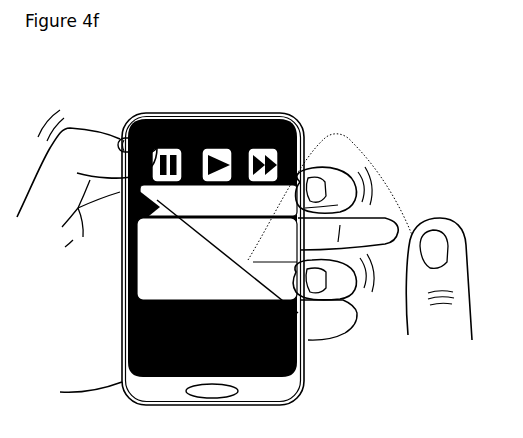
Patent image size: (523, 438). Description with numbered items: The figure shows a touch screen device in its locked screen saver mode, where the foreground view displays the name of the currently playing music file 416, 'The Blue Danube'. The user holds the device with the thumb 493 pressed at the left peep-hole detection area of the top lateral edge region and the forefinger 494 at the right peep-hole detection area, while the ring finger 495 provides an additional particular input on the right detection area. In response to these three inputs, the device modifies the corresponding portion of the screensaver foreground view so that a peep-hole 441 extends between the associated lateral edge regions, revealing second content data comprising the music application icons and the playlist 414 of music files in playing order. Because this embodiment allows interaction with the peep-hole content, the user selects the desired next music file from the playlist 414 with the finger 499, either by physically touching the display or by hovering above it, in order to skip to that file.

The peep-hole 441 is at (303, 140).
The playlist 414 is at (273, 283).
The name of the currently playing music file 416 is at (158, 270).
The thumb 493 is at (125, 137).
The forefinger 494 is at (338, 178).
The ring finger 495 is at (327, 283).
The finger 499 is at (432, 253).